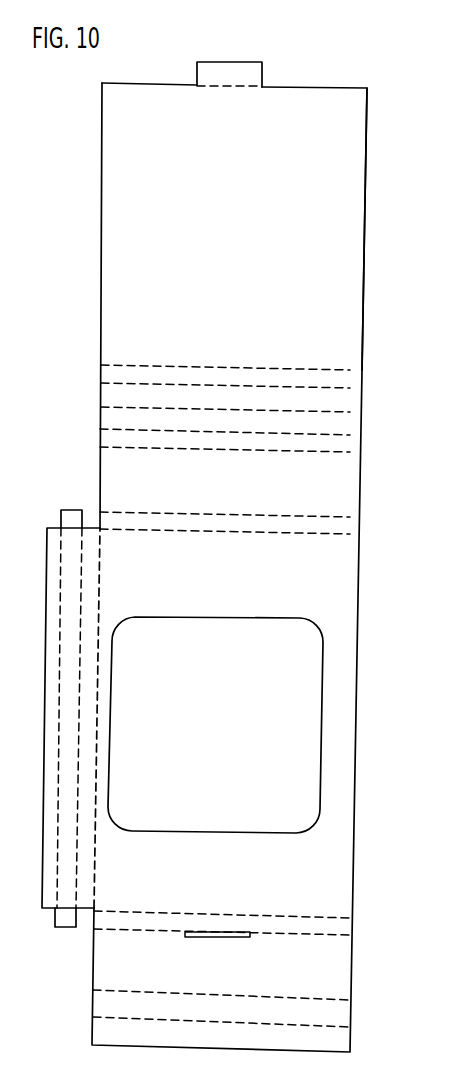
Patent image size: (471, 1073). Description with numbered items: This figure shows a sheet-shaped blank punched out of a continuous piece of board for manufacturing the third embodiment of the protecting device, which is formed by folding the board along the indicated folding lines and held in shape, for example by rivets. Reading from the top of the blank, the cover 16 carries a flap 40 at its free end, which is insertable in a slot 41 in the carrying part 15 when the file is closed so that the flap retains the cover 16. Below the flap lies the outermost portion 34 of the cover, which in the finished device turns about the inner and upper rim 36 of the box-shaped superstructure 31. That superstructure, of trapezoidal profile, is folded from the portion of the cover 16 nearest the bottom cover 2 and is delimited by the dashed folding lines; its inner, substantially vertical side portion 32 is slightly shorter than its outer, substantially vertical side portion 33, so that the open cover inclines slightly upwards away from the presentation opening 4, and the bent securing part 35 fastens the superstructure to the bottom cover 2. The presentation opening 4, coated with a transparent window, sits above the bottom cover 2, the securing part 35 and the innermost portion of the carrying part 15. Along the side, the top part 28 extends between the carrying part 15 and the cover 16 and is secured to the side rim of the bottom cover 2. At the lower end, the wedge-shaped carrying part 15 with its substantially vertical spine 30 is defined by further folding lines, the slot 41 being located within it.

The bottom cover 2 is at (342, 640).
The presentation opening 4 is at (303, 790).
The carrying part 15 is at (367, 984).
The cover 16 is at (95, 202).
The top part 28 is at (92, 527).
The spine 30 is at (345, 931).
The box-shaped superstructure 31 is at (94, 449).
The inner side portion 32 is at (357, 383).
The outer side portion 33 is at (353, 527).
The outermost portion 34 is at (348, 187).
The securing part 35 is at (350, 420).
The inner and upper rim 36 is at (325, 371).
The flap 40 is at (263, 70).
The slot 41 is at (225, 933).